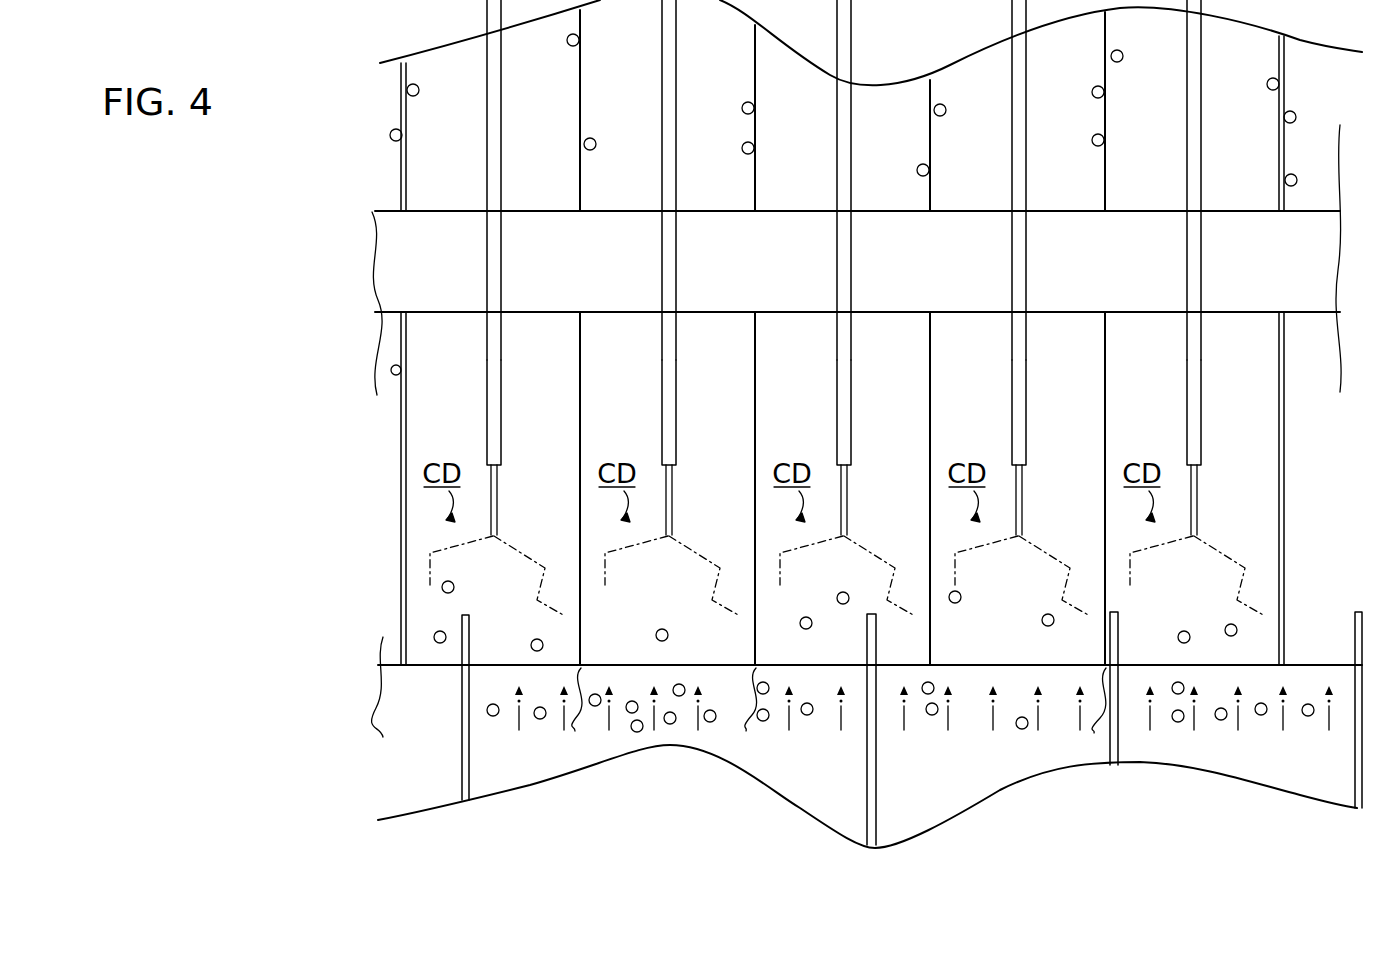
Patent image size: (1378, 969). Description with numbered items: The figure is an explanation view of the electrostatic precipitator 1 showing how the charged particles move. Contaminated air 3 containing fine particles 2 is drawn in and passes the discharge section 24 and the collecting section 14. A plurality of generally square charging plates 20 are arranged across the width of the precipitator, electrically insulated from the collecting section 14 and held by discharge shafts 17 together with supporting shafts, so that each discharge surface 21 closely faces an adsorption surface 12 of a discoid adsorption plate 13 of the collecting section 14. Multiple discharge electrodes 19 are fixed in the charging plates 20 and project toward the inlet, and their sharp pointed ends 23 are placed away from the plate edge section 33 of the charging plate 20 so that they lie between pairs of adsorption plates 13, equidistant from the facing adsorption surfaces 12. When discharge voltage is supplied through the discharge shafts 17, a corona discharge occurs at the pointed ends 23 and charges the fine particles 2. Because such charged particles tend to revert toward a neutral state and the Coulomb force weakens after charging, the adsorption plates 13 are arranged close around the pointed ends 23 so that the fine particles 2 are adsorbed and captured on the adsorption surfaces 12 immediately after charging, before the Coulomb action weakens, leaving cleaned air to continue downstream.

The electrostatic precipitator 1 is at (374, 456).
The fine particles 2 is at (419, 88).
The contaminated air 3 is at (832, 756).
The adsorption surfaces 12 is at (408, 160).
The adsorption plates 13 is at (408, 189).
The collecting section 14 is at (1309, 408).
The discharge shafts 17 is at (792, 288).
The discharge electrodes 19 is at (497, 479).
The charging plates 20 is at (500, 414).
The discharge surface 21 is at (503, 352).
The pointed ends 23 is at (494, 540).
The discharge section 24 is at (397, 581).
The plate edge section 33 is at (833, 716).